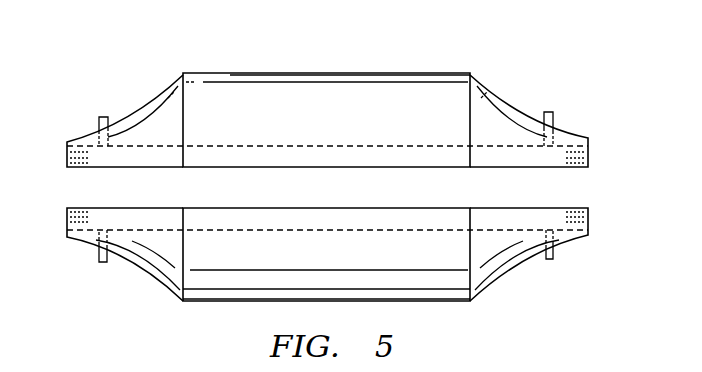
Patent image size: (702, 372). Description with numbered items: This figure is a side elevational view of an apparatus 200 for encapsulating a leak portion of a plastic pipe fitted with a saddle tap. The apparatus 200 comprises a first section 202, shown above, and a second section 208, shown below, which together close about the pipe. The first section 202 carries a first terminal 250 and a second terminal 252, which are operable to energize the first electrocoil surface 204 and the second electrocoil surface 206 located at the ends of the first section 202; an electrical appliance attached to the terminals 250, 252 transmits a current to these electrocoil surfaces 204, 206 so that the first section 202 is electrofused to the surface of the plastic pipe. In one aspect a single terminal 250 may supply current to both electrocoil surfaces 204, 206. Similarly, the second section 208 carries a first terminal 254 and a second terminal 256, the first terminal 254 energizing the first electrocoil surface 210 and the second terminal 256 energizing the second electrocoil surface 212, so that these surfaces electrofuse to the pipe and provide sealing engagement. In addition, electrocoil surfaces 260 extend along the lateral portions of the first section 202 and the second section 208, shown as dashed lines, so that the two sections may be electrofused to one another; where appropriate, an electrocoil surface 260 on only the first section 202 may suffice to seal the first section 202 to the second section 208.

The apparatus 200 is at (277, 53).
The first section 202 is at (363, 75).
The first electrocoil surface 204 is at (75, 140).
The second electrocoil surface 206 is at (575, 134).
The second section 208 is at (227, 305).
The first electrocoil surface 210 is at (82, 236).
The second electrocoil surface 212 is at (578, 236).
The first terminal 250 is at (103, 116).
The second terminal 252 is at (548, 112).
The first terminal 254 is at (103, 264).
The second terminal 256 is at (551, 261).
The electrocoil surfaces 260 is at (318, 166).